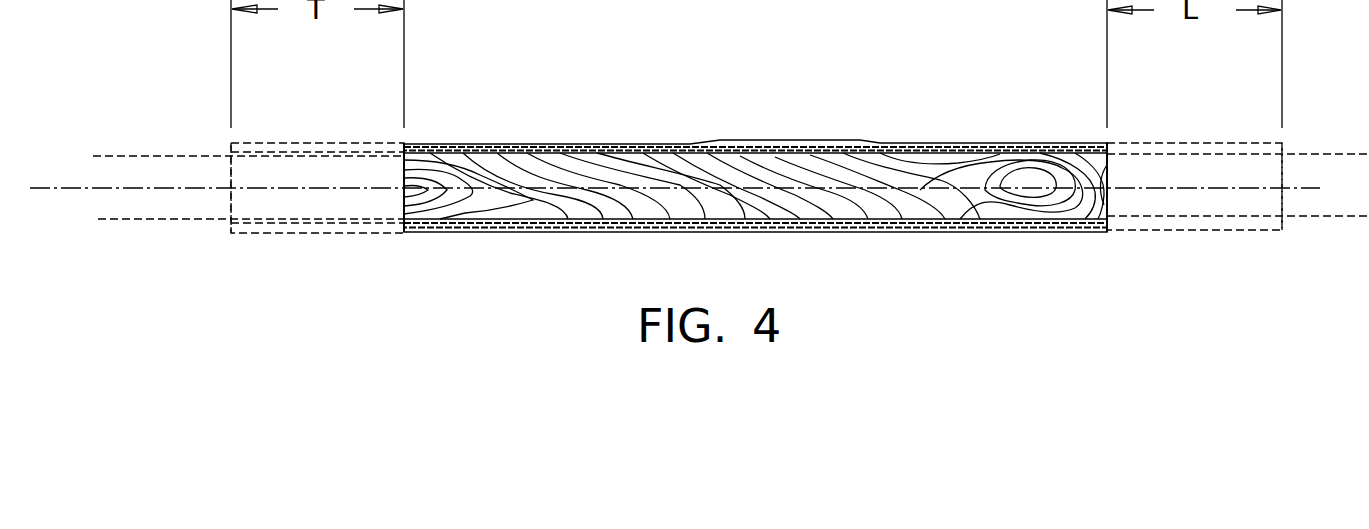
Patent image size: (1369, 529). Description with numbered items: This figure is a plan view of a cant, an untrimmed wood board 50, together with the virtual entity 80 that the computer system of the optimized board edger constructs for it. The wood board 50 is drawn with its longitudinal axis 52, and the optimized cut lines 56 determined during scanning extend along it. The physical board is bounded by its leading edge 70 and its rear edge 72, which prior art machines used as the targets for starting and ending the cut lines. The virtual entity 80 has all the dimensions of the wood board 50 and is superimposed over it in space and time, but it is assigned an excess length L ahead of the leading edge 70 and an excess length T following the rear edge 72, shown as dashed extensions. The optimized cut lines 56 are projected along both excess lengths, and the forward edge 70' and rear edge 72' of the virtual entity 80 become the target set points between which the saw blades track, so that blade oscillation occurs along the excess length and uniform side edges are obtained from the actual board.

The wood board 50 is at (812, 141).
The longitudinal axis of the wood board 52 is at (63, 188).
The optimized cut lines 56 is at (136, 219).
The leading edge 70 is at (1163, 155).
The forward edge of the virtual entity 70' is at (1314, 151).
The rear edge 72 is at (366, 157).
The rear edge of the virtual entity 72' is at (189, 144).
The virtual entity 80 is at (328, 233).